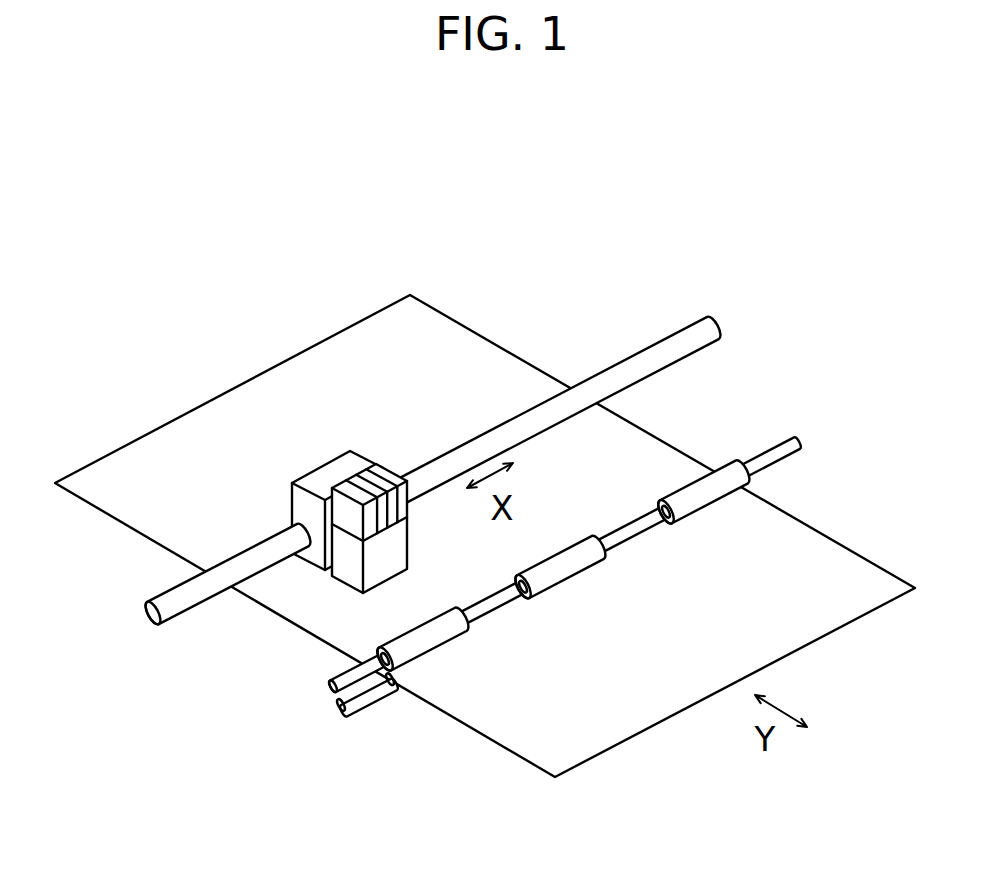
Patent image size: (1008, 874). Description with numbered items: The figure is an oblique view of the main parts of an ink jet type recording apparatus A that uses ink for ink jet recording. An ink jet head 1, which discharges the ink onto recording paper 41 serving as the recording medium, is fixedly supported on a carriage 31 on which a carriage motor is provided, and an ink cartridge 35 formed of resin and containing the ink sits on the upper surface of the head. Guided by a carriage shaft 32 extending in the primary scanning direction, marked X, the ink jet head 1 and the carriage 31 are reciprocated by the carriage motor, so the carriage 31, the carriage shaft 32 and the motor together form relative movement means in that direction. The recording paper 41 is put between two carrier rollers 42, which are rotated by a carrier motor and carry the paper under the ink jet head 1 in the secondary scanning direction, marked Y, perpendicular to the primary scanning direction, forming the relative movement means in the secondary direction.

The recording apparatus A is at (285, 209).
The ink jet head 1 is at (432, 463).
The carriage 31 is at (325, 463).
The carriage shaft 32 is at (663, 330).
The ink cartridge 35 is at (382, 477).
The recording paper 41 is at (527, 760).
The carrier rollers 42 is at (427, 648).